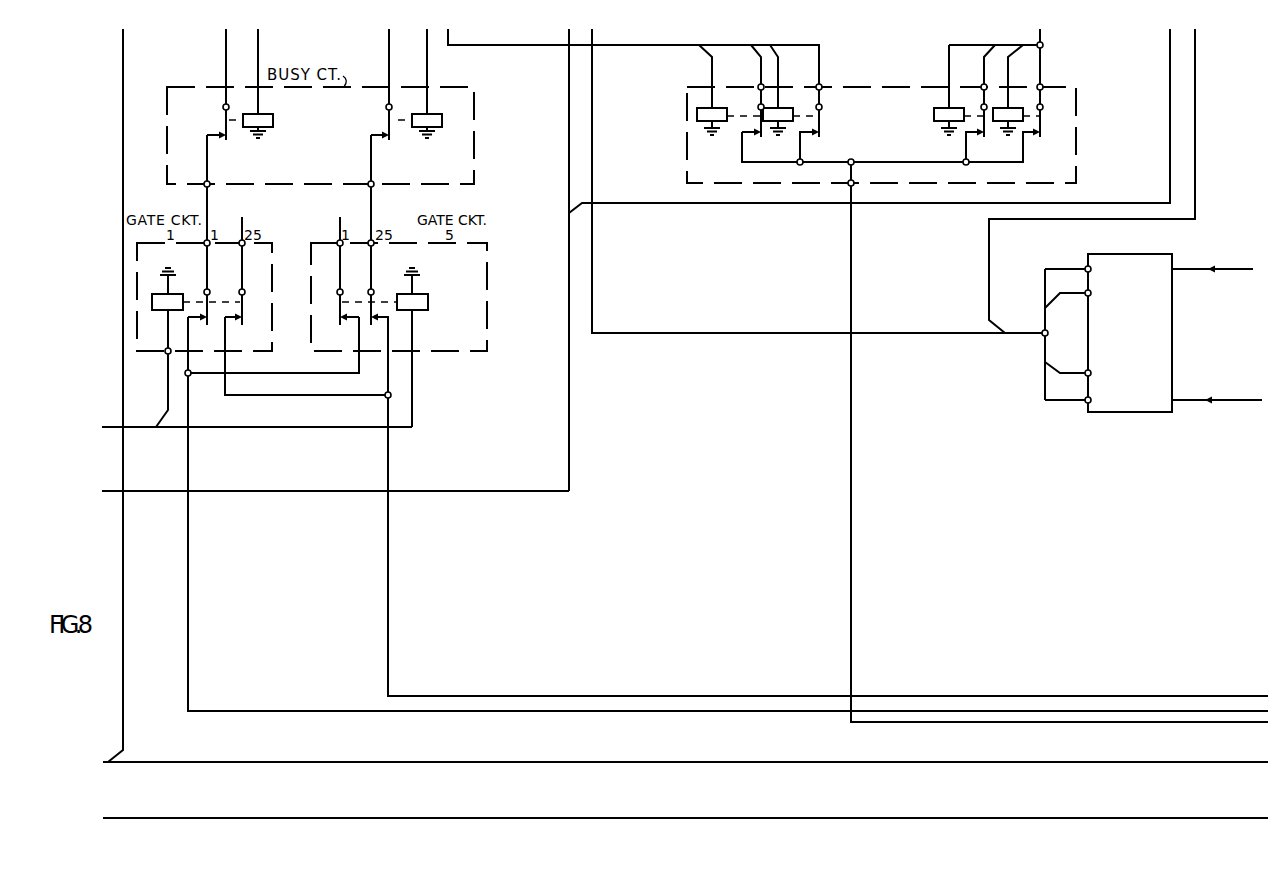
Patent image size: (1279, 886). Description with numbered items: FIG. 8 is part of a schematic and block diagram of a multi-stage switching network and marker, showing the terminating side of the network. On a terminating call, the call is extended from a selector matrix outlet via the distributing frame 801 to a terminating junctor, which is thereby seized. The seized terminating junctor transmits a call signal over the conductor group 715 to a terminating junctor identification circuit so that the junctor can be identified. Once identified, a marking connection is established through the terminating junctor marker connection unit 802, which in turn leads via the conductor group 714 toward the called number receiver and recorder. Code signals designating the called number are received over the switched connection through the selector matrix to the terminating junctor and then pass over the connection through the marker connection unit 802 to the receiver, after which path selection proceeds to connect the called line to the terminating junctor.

The conductor group 714 is at (592, 762).
The conductor group 715 is at (299, 493).
The distributing frame 801 is at (1173, 263).
The terminating junctor marker connection unit 802 is at (977, 375).